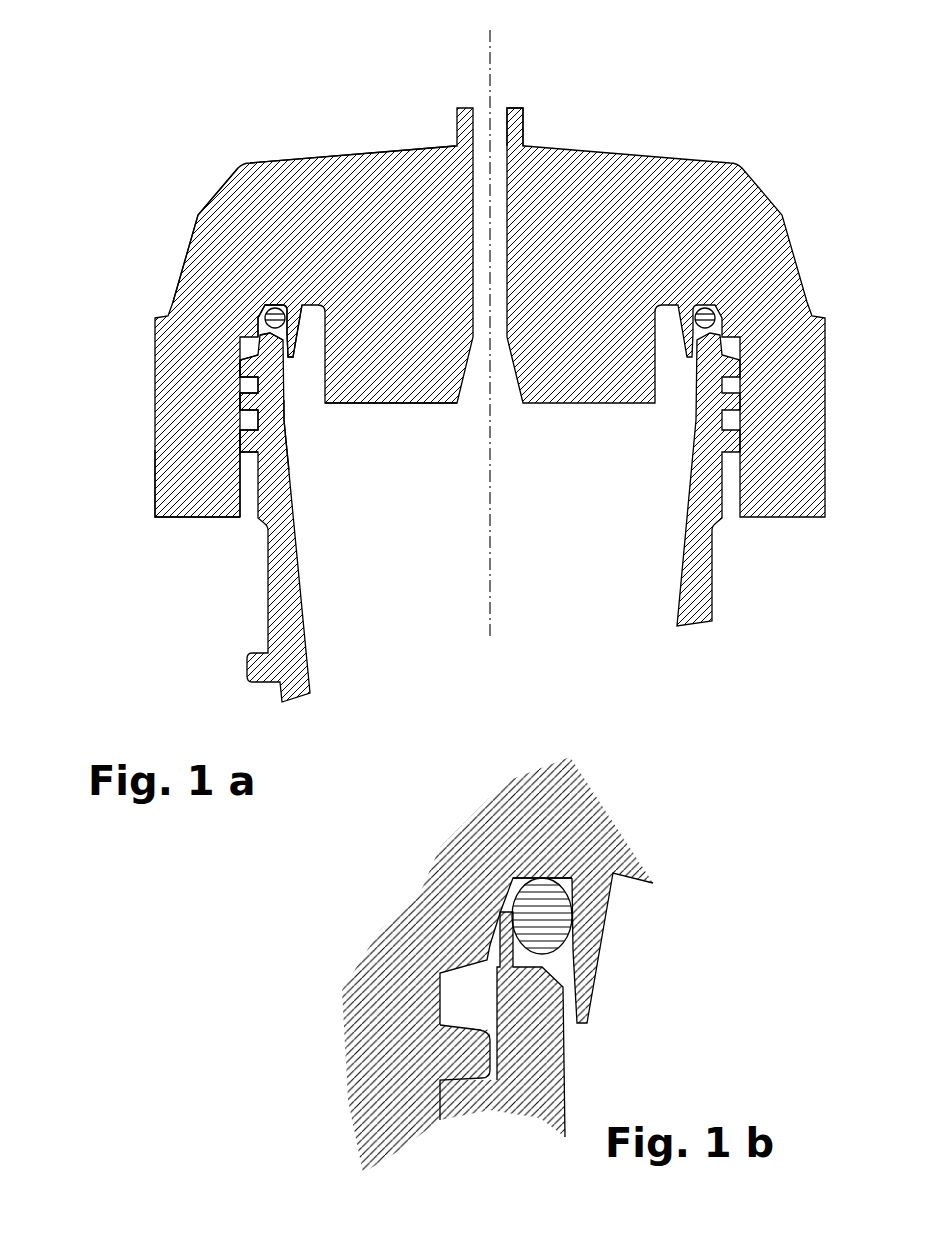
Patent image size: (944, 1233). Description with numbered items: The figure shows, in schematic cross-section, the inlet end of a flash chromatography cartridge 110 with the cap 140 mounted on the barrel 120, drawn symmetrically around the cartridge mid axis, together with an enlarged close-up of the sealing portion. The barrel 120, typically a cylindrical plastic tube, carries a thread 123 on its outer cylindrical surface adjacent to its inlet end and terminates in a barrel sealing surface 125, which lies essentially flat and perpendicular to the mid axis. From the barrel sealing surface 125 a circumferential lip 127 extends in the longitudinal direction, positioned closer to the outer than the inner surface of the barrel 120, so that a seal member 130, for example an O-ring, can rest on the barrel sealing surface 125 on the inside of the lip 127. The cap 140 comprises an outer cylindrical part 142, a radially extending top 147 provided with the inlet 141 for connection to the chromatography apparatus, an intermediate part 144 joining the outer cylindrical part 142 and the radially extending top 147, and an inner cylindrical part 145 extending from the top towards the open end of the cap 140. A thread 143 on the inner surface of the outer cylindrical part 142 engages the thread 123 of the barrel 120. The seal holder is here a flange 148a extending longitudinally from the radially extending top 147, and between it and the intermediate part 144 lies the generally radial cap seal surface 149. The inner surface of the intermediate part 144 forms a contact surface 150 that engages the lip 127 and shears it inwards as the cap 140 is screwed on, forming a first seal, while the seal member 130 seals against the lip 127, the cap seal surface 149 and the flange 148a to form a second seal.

In FIG. 1A, the cartridge 110 is at (167, 85).
In FIG. 1A, the barrel 120 is at (277, 595).
In FIG. 1A, the thread 123 is at (285, 427).
In FIG. 1A, the barrel sealing surface 125 is at (250, 360).
In FIG. 1B, the barrel sealing surface 125 is at (497, 973).
In FIG. 1A, the lip 127 is at (258, 330).
In FIG. 1B, the lip 127 is at (497, 947).
In FIG. 1A, the seal member 130 is at (277, 303).
In FIG. 1B, the seal member 130 is at (543, 877).
In FIG. 1A, the cap 140 is at (263, 138).
In FIG. 1A, the inlet 141 is at (522, 123).
In FIG. 1A, the outer cylindrical part 142 is at (152, 512).
In FIG. 1A, the thread 143 is at (287, 453).
In FIG. 1A, the intermediate part 144 is at (198, 213).
In FIG. 1A, the inner cylindrical part 145 is at (403, 397).
In FIG. 1A, the radially extending top 147 is at (392, 150).
In FIG. 1A, the flange 148a is at (300, 340).
In FIG. 1B, the flange 148a is at (592, 870).
In FIG. 1A, the cap seal surface 149 is at (260, 305).
In FIG. 1B, the cap seal surface 149 is at (540, 878).
In FIG. 1A, the contact surface 150 is at (265, 316).
In FIG. 1B, the contact surface 150 is at (512, 903).